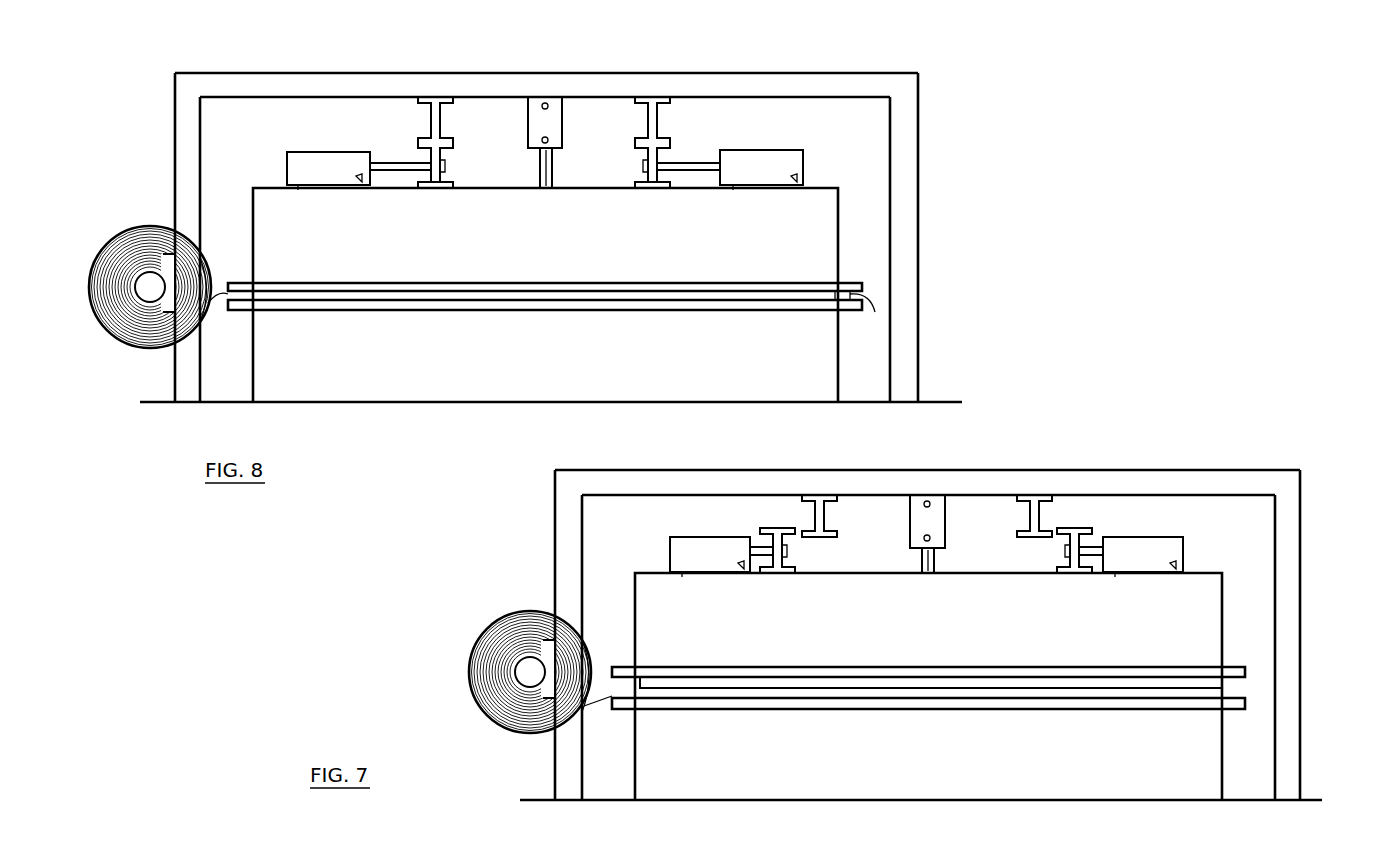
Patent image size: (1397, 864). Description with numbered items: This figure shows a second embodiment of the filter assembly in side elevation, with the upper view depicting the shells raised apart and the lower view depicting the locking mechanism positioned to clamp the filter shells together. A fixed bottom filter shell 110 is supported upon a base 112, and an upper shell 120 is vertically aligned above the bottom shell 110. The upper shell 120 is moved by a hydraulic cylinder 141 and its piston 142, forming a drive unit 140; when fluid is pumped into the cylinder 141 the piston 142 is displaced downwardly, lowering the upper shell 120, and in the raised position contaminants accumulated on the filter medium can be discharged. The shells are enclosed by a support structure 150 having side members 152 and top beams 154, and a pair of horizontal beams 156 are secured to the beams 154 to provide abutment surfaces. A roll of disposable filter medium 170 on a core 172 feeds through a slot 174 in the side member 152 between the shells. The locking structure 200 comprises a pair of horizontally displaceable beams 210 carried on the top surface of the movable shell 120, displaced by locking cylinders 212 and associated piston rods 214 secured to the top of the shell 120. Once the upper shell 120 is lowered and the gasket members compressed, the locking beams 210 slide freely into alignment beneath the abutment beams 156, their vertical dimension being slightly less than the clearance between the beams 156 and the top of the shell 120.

In FIG. 8, the bottom filter shell 110 is at (845, 333).
In FIG. 7, the bottom filter shell 110 is at (1228, 747).
In FIG. 8, the base 112 is at (943, 402).
In FIG. 7, the base 112 is at (1315, 800).
In FIG. 8, the upper shell 120 is at (845, 207).
In FIG. 7, the upper shell 120 is at (1232, 612).
In FIG. 8, the drive assembly 140 is at (548, 142).
In FIG. 7, the drive assembly 140 is at (937, 534).
In FIG. 8, the hydraulic cylinder 141 is at (528, 121).
In FIG. 7, the hydraulic cylinder 141 is at (910, 518).
In FIG. 8, the piston 142 is at (540, 168).
In FIG. 7, the piston 142 is at (922, 556).
In FIG. 8, the enclosure 150 is at (578, 204).
In FIG. 7, the enclosure 150 is at (960, 601).
In FIG. 8, the side wall 152 is at (905, 121).
In FIG. 7, the side wall 152 is at (1290, 535).
In FIG. 8, the beams 154 is at (750, 73).
In FIG. 7, the beams 154 is at (1217, 470).
In FIG. 8, the horizontal beam 156 is at (431, 121).
In FIG. 7, the horizontal beam 156 is at (1039, 512).
In FIG. 8, the roll of material 170 is at (131, 308).
In FIG. 7, the roll of material 170 is at (504, 686).
In FIG. 8, the core 172 is at (148, 283).
In FIG. 7, the core 172 is at (526, 668).
In FIG. 8, the slot 174 is at (172, 318).
In FIG. 7, the slot 174 is at (551, 703).
In FIG. 7, the locking structure 200 is at (935, 562).
In FIG. 8, the horizontally displaceable beam 210 is at (650, 208).
In FIG. 7, the horizontally displaceable beam 210 is at (778, 575).
In FIG. 8, the locking cylinders 212 is at (318, 151).
In FIG. 7, the locking cylinders 212 is at (670, 550).
In FIG. 8, the piston rods 214 is at (702, 172).
In FIG. 7, the piston rods 214 is at (760, 552).